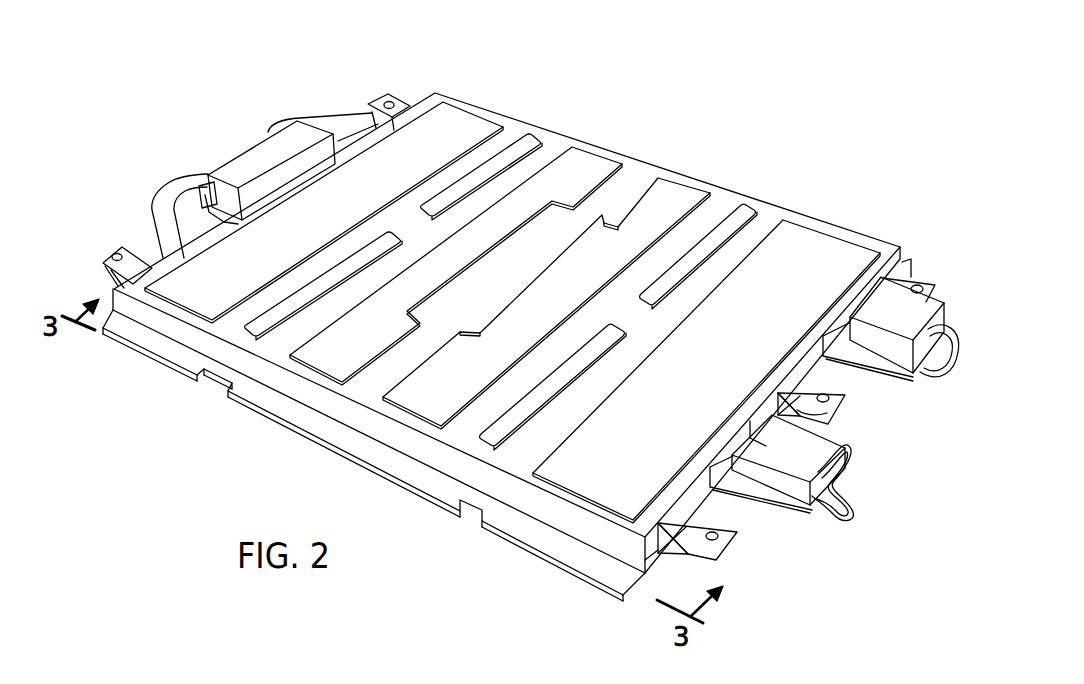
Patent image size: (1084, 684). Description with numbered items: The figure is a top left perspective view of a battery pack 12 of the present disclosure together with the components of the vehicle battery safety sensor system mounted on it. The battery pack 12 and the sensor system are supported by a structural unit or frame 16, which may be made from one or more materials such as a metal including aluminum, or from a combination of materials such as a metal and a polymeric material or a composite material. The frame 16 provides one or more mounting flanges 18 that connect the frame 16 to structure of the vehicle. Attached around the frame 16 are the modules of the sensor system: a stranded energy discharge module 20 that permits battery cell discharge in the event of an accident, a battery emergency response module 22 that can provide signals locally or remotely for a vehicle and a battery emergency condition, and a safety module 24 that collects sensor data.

The battery pack 12 is at (803, 168).
The frame 16 is at (650, 556).
The mounting flanges 18 is at (190, 357).
The stranded energy discharge module 20 is at (239, 178).
The battery emergency response module 22 is at (937, 303).
The safety module 24 is at (820, 450).